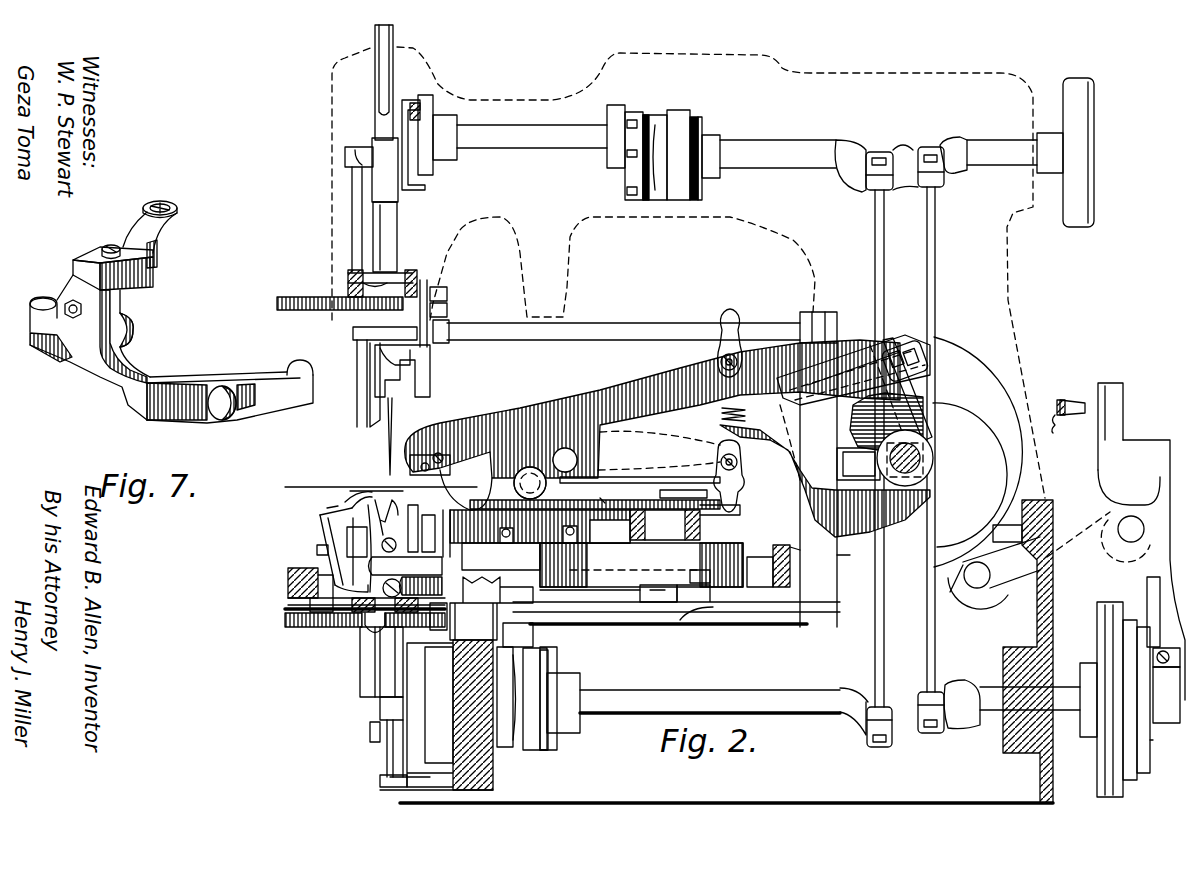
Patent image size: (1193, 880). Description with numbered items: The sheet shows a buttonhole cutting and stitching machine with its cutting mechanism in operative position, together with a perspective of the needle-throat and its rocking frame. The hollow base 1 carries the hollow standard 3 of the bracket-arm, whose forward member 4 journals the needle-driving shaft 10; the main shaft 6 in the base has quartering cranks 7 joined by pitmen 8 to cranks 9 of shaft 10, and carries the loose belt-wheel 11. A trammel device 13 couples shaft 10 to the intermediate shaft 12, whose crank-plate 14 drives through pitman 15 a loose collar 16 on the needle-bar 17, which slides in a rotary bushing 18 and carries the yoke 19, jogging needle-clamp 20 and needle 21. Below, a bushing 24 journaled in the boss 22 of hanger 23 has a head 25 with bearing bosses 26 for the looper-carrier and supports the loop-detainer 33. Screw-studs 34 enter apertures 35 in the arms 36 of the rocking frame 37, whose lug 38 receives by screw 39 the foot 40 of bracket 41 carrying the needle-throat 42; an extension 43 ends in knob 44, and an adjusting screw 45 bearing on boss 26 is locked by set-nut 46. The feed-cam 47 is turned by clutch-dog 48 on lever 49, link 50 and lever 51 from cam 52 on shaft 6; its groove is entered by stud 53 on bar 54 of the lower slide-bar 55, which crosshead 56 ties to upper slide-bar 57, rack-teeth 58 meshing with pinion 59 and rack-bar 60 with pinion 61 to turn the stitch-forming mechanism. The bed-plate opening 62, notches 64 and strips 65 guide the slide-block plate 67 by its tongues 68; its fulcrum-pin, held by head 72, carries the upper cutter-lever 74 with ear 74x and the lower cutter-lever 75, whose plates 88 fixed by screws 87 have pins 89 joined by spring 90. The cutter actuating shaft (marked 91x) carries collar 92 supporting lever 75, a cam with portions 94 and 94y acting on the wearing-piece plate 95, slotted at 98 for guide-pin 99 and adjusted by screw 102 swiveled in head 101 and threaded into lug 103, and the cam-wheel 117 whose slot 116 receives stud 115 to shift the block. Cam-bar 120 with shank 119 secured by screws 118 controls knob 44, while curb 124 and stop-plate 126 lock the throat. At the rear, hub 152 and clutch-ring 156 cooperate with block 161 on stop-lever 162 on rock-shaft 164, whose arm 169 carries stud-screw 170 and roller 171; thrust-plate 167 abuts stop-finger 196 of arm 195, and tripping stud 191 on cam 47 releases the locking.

In FIG. 2, the hollow rectangular base 1 is at (1037, 782).
In FIG. 2, the hollow standard 3 is at (1018, 350).
In FIG. 2, the forwardly extending member 4 is at (728, 222).
In FIG. 2, the main shaft 6 is at (818, 700).
In FIG. 2, the quartering cranks 7 is at (910, 707).
In FIG. 2, the pitmen 8 is at (888, 612).
In FIG. 2, the cranks 9 is at (903, 160).
In FIG. 2, the needle-driving shaft 10 is at (778, 154).
In FIG. 2, the loose belt-wheel 11 is at (1097, 762).
In FIG. 2, the intermediate shaft 12 is at (520, 137).
In FIG. 7, the trammel device 13 is at (278, 398).
In FIG. 2, the trammel device 13 is at (663, 145).
In FIG. 2, the crank-plate 14 is at (430, 166).
In FIG. 7, the pitman 15 is at (62, 318).
In FIG. 2, the pitman 15 is at (376, 128).
In FIG. 2, the loose collar 16 is at (371, 205).
In FIG. 2, the needle-bar 17 is at (400, 238).
In FIG. 2, the rotary bushing 18 is at (385, 369).
In FIG. 2, the yoke 19 is at (431, 372).
In FIG. 2, the needle-clamp 20 is at (375, 398).
In FIG. 2, the needle 21 is at (388, 430).
In FIG. 2, the hollow boss 22 is at (381, 662).
In FIG. 2, the depending hanger 23 is at (493, 776).
In FIG. 2, the rotary bushing 24 is at (378, 687).
In FIG. 2, the head 25 is at (460, 590).
In FIG. 2, the bearing bosses 26 is at (359, 548).
In FIG. 2, the loop-detainer 33 is at (385, 526).
In FIG. 2, the screw-studs 34 is at (386, 589).
In FIG. 7, the bearing apertures 35 is at (135, 326).
In FIG. 7, the lateral arms 36 is at (63, 362).
In FIG. 2, the lateral arms 36 is at (376, 595).
In FIG. 7, the rocking frame 37 is at (96, 330).
In FIG. 2, the rocking frame 37 is at (322, 550).
In FIG. 7, the inwardly extending lug 38 is at (157, 282).
In FIG. 7, the screw 39 is at (105, 247).
In FIG. 2, the screw 39 is at (326, 498).
In FIG. 7, the foot 40 is at (74, 259).
In FIG. 2, the foot 40 is at (320, 515).
In FIG. 7, the bracket 41 is at (133, 224).
In FIG. 2, the bracket 41 is at (356, 495).
In FIG. 7, the needle-throat 42 is at (172, 204).
In FIG. 2, the needle-throat 42 is at (376, 488).
In FIG. 2, the forward extension 43 is at (421, 586).
In FIG. 7, the knob 44 is at (303, 362).
In FIG. 2, the adjusting screw 45 is at (318, 550).
In FIG. 7, the set-nut 46 is at (77, 304).
In FIG. 2, the set-nut 46 is at (430, 464).
In FIG. 2, the feed-cam 47 is at (705, 545).
In FIG. 2, the clutch-dog 48 is at (768, 566).
In FIG. 2, the vibratory lever 49 is at (646, 594).
In FIG. 2, the link 50 is at (590, 595).
In FIG. 2, the vibratory lever 51 is at (518, 635).
In FIG. 2, the cam 52 is at (527, 698).
In FIG. 2, the stud 53 is at (690, 578).
In FIG. 2, the bar 54 is at (676, 598).
In FIG. 2, the lower slide-bar 55 is at (735, 626).
In FIG. 2, the crosshead 56 is at (838, 578).
In FIG. 2, the slide-bar 57 is at (640, 323).
In FIG. 2, the rack-teeth 58 is at (285, 624).
In FIG. 2, the pinion 59 is at (365, 628).
In FIG. 2, the rack-bar 60 is at (347, 290).
In FIG. 2, the pinion 61 is at (362, 312).
In FIG. 2, the opening 62 is at (1007, 533).
In FIG. 2, the notches 64 is at (720, 510).
In FIG. 2, the strips 65 is at (683, 488).
In FIG. 2, the flat plate 67 is at (648, 500).
In FIG. 2, the tongues 68 is at (575, 526).
In FIG. 2, the enlarged head 72 is at (530, 483).
In FIG. 2, the upper cutter-lever 74 is at (630, 375).
In FIG. 2, the depending ear 74x is at (610, 493).
In FIG. 2, the lower cutter-lever 75 is at (658, 478).
In FIG. 2, the fastening screws 87 is at (720, 362).
In FIG. 2, the plates 88 is at (729, 426).
In FIG. 2, the pin 89 is at (730, 315).
In FIG. 2, the spring 90 is at (745, 412).
In FIG. 2, the link 91x is at (808, 441).
In FIG. 2, the fixed collar 92 is at (930, 445).
In FIG. 2, the initially acting operative edge portion 94 is at (842, 442).
In FIG. 2, the operative portion 94y is at (905, 400).
In FIG. 2, the plate 95 is at (905, 345).
In FIG. 2, the longitudinal slot 98 is at (912, 345).
In FIG. 2, the headed guide-pin 99 is at (838, 340).
In FIG. 2, the head 101 is at (890, 345).
In FIG. 2, the adjusting screw 102 is at (854, 355).
In FIG. 2, the lug 103 is at (818, 469).
In FIG. 2, the lateral stud 115 is at (858, 464).
In FIG. 2, the cam-slot 116 is at (960, 460).
In FIG. 2, the cam-wheel 117 is at (970, 475).
In FIG. 2, the screws 118 is at (490, 535).
In FIG. 2, the shank 119 is at (501, 556).
In FIG. 2, the cam-bar 120 is at (406, 540).
In FIG. 2, the segmental curb 124 is at (290, 584).
In FIG. 2, the segmental stop-plate 126 is at (300, 568).
In FIG. 2, the hub 152 is at (1167, 685).
In FIG. 2, the clutch-ring 156 is at (1143, 750).
In FIG. 2, the vertically movable block 161 is at (1147, 590).
In FIG. 2, the stop-motion lever 162 is at (1116, 570).
In FIG. 2, the rock-shaft 164 is at (1125, 539).
In FIG. 2, the thrust-plate 167 is at (1118, 417).
In FIG. 2, the arm 169 is at (1001, 562).
In FIG. 2, the stud-screw 170 is at (955, 592).
In FIG. 2, the anti-friction roller 171 is at (983, 600).
In FIG. 2, the tripping stud 191 is at (790, 550).
In FIG. 2, the rigid arm 195 is at (1062, 429).
In FIG. 2, the stop-finger 196 is at (1068, 400).